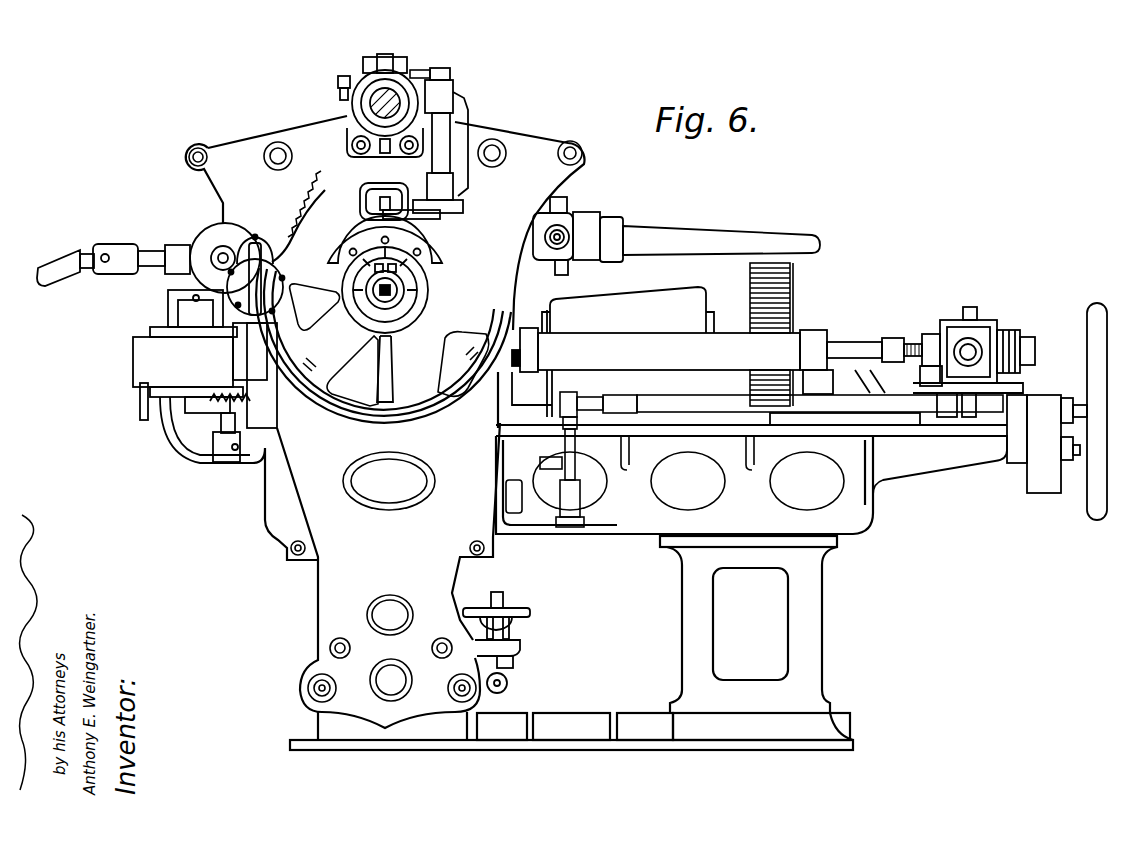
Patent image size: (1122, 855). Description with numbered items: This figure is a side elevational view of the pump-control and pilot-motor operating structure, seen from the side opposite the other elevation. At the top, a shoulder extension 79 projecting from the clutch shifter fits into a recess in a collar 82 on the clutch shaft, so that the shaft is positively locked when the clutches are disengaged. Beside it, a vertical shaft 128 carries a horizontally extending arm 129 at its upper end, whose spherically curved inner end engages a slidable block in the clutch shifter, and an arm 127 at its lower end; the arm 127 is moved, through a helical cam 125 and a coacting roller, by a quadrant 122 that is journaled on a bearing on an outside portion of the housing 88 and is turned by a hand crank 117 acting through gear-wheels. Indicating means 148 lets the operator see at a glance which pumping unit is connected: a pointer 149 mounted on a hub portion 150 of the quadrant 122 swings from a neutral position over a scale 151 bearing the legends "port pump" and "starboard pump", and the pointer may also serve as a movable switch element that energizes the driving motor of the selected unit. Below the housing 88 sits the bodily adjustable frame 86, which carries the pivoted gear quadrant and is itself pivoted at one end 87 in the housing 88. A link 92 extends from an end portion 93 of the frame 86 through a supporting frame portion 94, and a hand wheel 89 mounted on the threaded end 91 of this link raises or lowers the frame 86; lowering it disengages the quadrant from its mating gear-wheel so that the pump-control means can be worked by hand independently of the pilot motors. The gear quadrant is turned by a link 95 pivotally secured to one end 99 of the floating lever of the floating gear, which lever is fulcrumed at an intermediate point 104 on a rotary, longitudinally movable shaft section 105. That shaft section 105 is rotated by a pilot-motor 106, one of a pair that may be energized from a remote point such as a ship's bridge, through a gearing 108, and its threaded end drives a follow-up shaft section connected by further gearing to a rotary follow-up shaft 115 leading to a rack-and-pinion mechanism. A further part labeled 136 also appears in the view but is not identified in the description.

The shoulder extension 79 is at (388, 58).
The collar 82 is at (414, 71).
The horizontally extending arm 129 is at (449, 68).
The vertical shaft 128 is at (445, 128).
The link 95 is at (349, 103).
The arm 127 is at (405, 178).
The quadrant 122 is at (296, 210).
The helical cam 125 is at (424, 243).
The hand crank 117 is at (253, 291).
The hub portion 150 is at (404, 299).
The indicating means 148 is at (384, 343).
The pointer 149 is at (393, 398).
The scale 151 is at (334, 383).
The handle 136 is at (63, 276).
The rotary follow-up shaft 115 is at (684, 234).
The pilot-motor 106 is at (648, 297).
The gearing 108 is at (778, 299).
The intermediate point 104 is at (969, 307).
The shaft section 105 is at (930, 333).
The end of floating lever 99 is at (978, 332).
The housing 88 is at (333, 588).
The end of frame 87 is at (326, 688).
The threaded end 91 is at (498, 594).
The hand wheel 89 is at (516, 611).
The supporting frame portion 94 is at (511, 651).
The link 92 is at (513, 666).
The end portion 93 is at (508, 684).
The bodily adjustable frame 86 is at (490, 697).